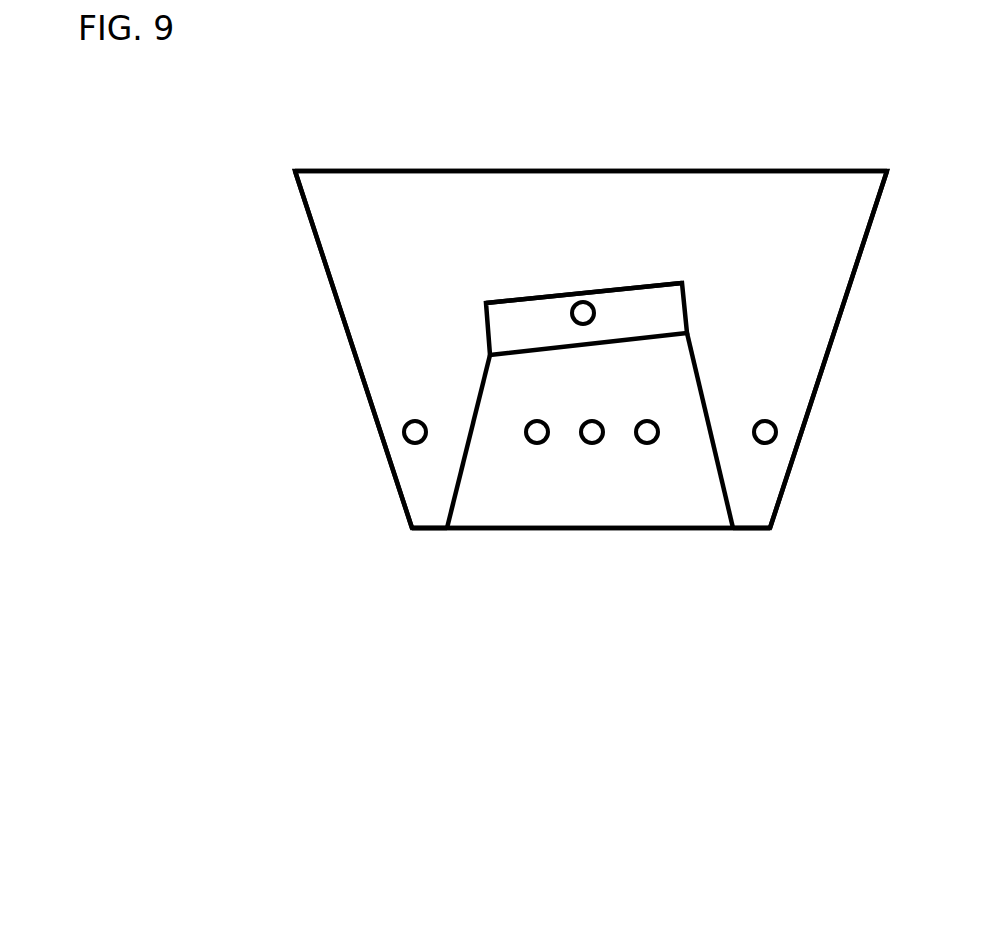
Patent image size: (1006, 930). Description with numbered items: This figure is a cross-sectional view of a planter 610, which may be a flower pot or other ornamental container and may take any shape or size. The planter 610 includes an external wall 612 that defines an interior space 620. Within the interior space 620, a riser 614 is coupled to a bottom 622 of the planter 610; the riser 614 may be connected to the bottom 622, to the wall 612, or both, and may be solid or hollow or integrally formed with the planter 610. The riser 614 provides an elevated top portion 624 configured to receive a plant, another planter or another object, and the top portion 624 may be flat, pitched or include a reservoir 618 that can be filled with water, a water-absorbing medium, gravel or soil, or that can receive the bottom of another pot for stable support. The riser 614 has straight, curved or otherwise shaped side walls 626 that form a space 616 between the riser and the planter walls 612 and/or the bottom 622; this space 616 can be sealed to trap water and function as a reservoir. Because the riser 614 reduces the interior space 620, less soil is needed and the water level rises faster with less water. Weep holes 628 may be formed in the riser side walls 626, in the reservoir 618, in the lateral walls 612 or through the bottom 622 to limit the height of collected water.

The planter 610 is at (604, 352).
The external wall 612 is at (835, 332).
The riser 614 is at (470, 420).
The space 616 is at (412, 483).
The reservoir 618 is at (649, 307).
The interior space 620 is at (510, 218).
The bottom 622 is at (686, 532).
The top portion 624 is at (497, 289).
The side walls 626 is at (477, 398).
The weep holes 628 is at (584, 300).